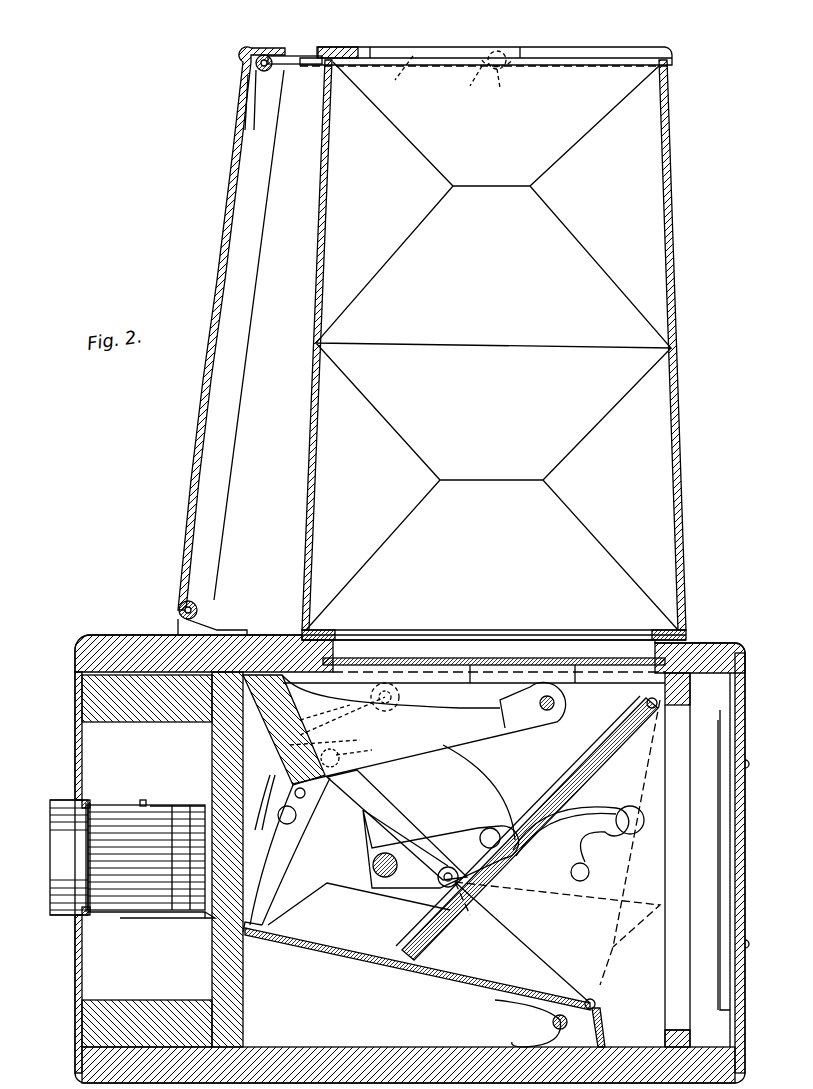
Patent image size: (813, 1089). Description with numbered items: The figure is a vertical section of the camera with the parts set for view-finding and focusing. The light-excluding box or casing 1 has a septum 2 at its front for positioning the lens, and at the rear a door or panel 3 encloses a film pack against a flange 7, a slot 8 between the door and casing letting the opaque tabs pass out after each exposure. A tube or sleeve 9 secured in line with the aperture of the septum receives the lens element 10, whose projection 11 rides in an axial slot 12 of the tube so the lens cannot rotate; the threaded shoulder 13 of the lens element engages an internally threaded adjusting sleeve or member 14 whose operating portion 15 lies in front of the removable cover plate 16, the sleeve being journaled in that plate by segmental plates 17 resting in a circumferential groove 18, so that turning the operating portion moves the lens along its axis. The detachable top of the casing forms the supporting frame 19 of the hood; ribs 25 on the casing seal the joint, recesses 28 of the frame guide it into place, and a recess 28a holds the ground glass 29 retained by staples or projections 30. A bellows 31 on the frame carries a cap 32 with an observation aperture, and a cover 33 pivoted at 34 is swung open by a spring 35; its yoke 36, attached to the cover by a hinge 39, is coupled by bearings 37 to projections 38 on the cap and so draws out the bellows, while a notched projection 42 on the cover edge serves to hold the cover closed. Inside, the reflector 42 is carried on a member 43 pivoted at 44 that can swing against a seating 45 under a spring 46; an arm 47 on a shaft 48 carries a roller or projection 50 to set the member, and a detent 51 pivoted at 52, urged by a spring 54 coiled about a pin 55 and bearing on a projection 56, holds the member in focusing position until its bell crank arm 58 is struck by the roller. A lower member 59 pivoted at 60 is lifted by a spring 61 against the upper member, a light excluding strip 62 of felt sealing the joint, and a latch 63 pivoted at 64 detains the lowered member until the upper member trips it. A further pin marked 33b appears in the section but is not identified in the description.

The box or casing 1 is at (410, 859).
The septum 2 is at (243, 985).
The door or panel 3 is at (745, 705).
The flange 7 is at (672, 895).
The slot 8 is at (732, 790).
The tube or sleeve 9 is at (200, 915).
The lens element 10 is at (246, 80).
The projection 11 is at (143, 798).
The axial slot 12 is at (175, 802).
The threaded shoulder 13 is at (78, 840).
The adjusting sleeve or member 14 is at (122, 918).
The operating portion 15 is at (55, 800).
The removable cover plate 16 is at (75, 975).
The segmental plates 17 is at (88, 780).
The circumferential groove 18 is at (88, 795).
The supporting frame 19 is at (700, 665).
The ribs 25 is at (470, 672).
The recesses 28 is at (500, 655).
The recess 28a is at (494, 661).
The ground glass 29 is at (404, 640).
The staples or projections 30 is at (640, 658).
The bellows 31 is at (312, 490).
The cap 32 is at (358, 40).
The cover 33 is at (220, 385).
The pivot pin 33b is at (450, 885).
The pivot 34 is at (178, 608).
The spring 35 is at (214, 570).
The yoke 36 is at (401, 80).
The bearings 37 is at (505, 79).
The projections 38 is at (483, 83).
The hinge 39 is at (270, 58).
The reflector 42 is at (300, 56).
The member 43 is at (585, 770).
The pivot 44 is at (640, 704).
The seating 45 is at (472, 730).
The spring 46 is at (600, 810).
The arm 47 is at (452, 845).
The shaft 48 is at (373, 865).
The roller or projection 50 is at (490, 826).
The detent 51 is at (390, 806).
The pivot 52 is at (358, 754).
The spring 54 is at (262, 805).
The pin 55 is at (325, 711).
The projection 56 is at (342, 716).
The lateral projection or bell crank arm 58 is at (372, 742).
The lower member 59 is at (420, 960).
The pivot 60 is at (598, 1005).
The spring 61 is at (515, 1010).
The light excluding strip 62 is at (340, 925).
The latch 63 is at (268, 888).
The pivot 64 is at (392, 697).